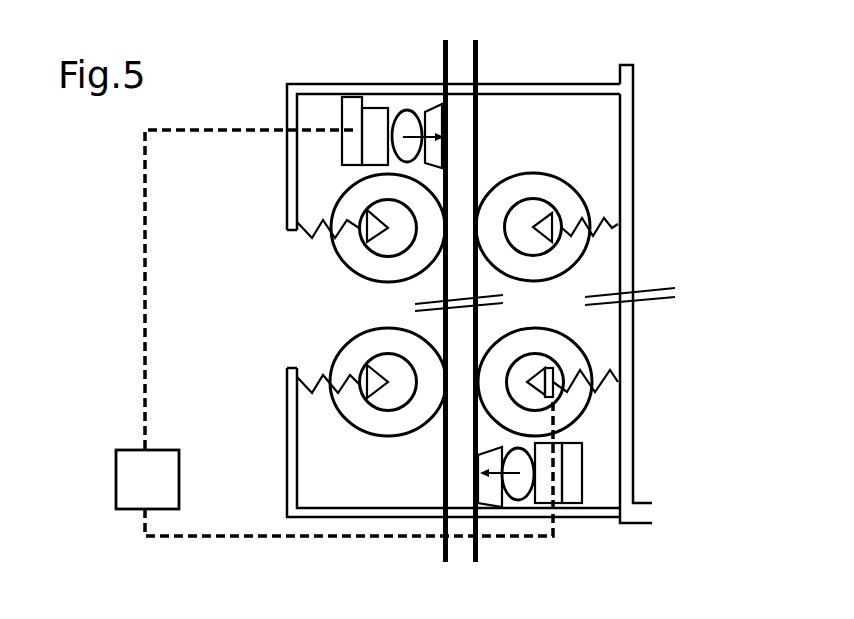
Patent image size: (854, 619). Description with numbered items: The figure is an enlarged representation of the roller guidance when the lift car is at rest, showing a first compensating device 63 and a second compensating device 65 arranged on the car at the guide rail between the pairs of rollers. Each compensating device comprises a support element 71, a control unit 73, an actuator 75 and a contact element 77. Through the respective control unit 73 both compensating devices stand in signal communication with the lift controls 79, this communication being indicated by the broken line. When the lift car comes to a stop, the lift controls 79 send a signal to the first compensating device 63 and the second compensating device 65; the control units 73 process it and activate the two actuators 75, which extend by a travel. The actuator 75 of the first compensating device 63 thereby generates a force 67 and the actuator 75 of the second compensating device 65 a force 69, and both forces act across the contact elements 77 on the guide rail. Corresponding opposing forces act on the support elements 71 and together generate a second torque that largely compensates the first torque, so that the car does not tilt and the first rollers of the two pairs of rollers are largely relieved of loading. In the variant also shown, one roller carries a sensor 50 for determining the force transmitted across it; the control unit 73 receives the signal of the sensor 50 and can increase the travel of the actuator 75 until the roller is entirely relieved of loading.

The sensor 50 is at (556, 373).
The first compensating device 63 is at (600, 432).
The second compensating device 65 is at (314, 165).
The force 67 is at (493, 476).
The force 69 is at (420, 126).
The support element 71 is at (352, 120).
The control unit 73 is at (376, 120).
The actuator 75 is at (408, 118).
The contact element 77 is at (436, 128).
The lift controls 79 is at (128, 483).